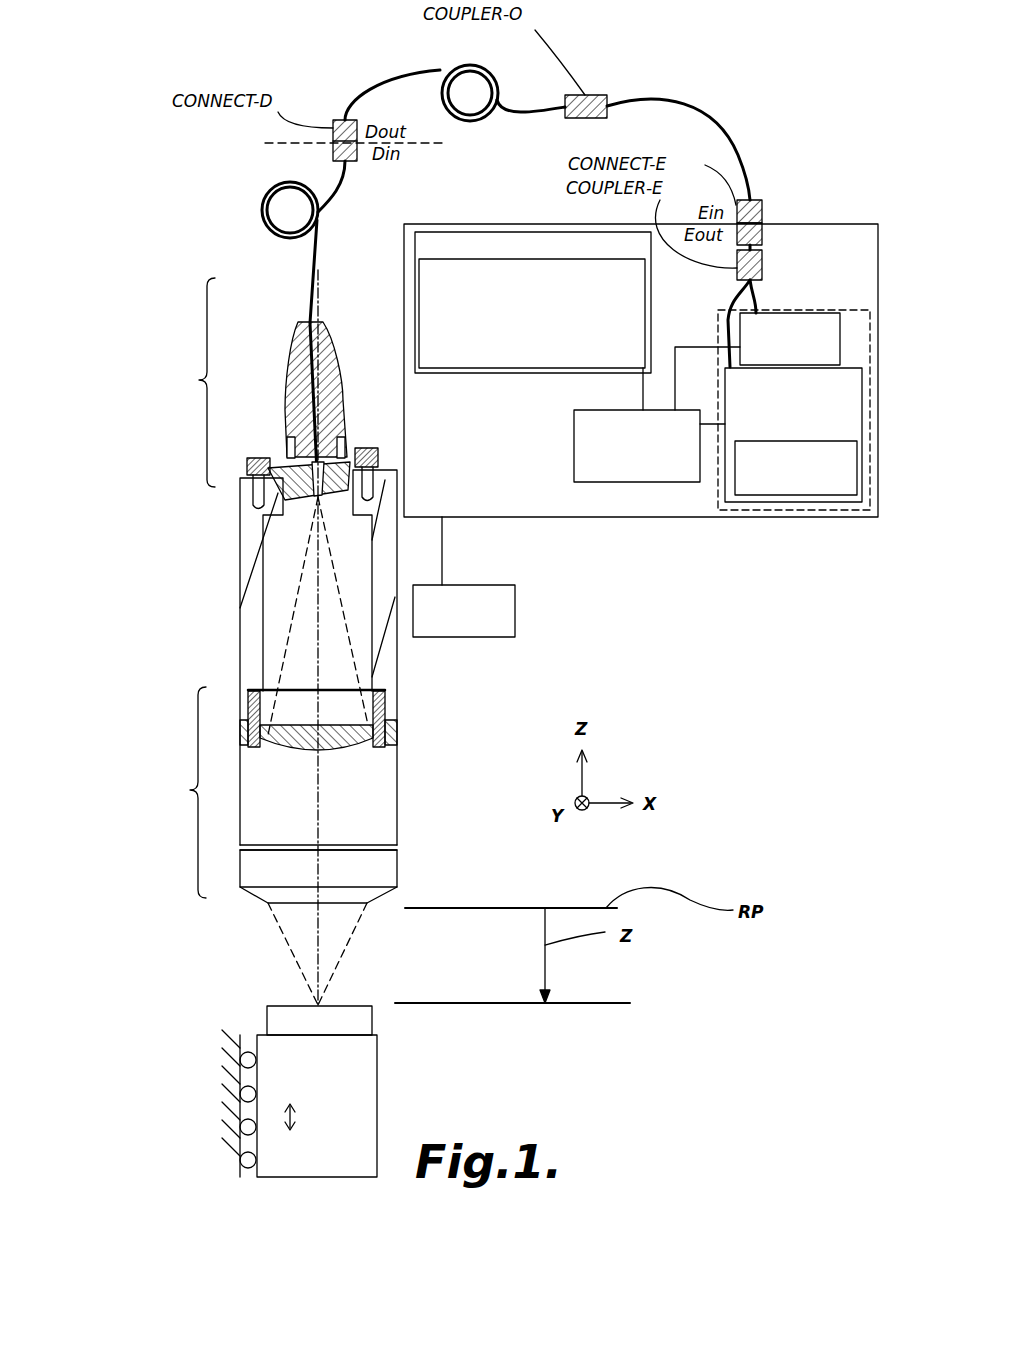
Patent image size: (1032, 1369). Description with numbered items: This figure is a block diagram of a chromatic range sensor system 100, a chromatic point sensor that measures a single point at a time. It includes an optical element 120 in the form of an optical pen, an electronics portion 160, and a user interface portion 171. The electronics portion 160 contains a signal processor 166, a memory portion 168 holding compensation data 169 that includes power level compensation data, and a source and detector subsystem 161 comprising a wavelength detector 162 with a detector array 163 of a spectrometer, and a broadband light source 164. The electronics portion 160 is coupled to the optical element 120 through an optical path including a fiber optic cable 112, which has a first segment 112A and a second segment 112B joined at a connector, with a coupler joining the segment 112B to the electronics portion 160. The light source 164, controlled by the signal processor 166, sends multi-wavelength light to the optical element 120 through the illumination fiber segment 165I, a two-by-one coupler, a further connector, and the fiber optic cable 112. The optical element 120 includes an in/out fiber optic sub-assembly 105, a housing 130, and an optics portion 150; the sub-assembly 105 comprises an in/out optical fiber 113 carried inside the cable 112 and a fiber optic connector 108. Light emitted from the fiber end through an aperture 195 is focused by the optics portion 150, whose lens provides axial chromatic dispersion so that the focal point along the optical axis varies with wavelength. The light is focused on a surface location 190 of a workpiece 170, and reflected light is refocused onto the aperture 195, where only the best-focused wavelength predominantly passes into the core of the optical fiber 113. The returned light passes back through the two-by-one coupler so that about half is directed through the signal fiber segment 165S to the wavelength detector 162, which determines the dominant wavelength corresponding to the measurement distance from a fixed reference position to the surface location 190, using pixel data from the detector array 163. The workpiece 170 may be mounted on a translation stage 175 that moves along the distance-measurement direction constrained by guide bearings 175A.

The chromatic range sensor system 100 is at (173, 225).
The in/out fiber optic sub-assembly 105 is at (180, 382).
The fiber optic connector 108 is at (290, 385).
The fiber optic cable 112 is at (676, 90).
The first segment of fiber optic cable 112A is at (310, 318).
The second segment of fiber optic cable 112B is at (535, 115).
The in/out optical fiber 113 is at (290, 470).
The optical element 120 is at (135, 712).
The housing 130 is at (240, 648).
The optics portion 150 is at (272, 792).
The electronics portion 160 is at (640, 518).
The source and detector subsystem 161 is at (835, 511).
The wavelength detector 162 is at (730, 502).
The detector array 163 is at (800, 496).
The broadband light source 164 is at (842, 338).
The illumination fiber segment 165I is at (762, 268).
The signal fiber segment 165S is at (735, 296).
The signal processor 166 is at (574, 470).
The memory portion 168 is at (473, 232).
The compensation data 169 is at (419, 262).
The workpiece 170 is at (355, 1018).
The user interface portion 171 is at (515, 615).
The translation stage 175 is at (400, 1070).
The guide bearings 175A is at (248, 1178).
The surface location 190 is at (280, 1005).
The aperture 195 is at (318, 497).